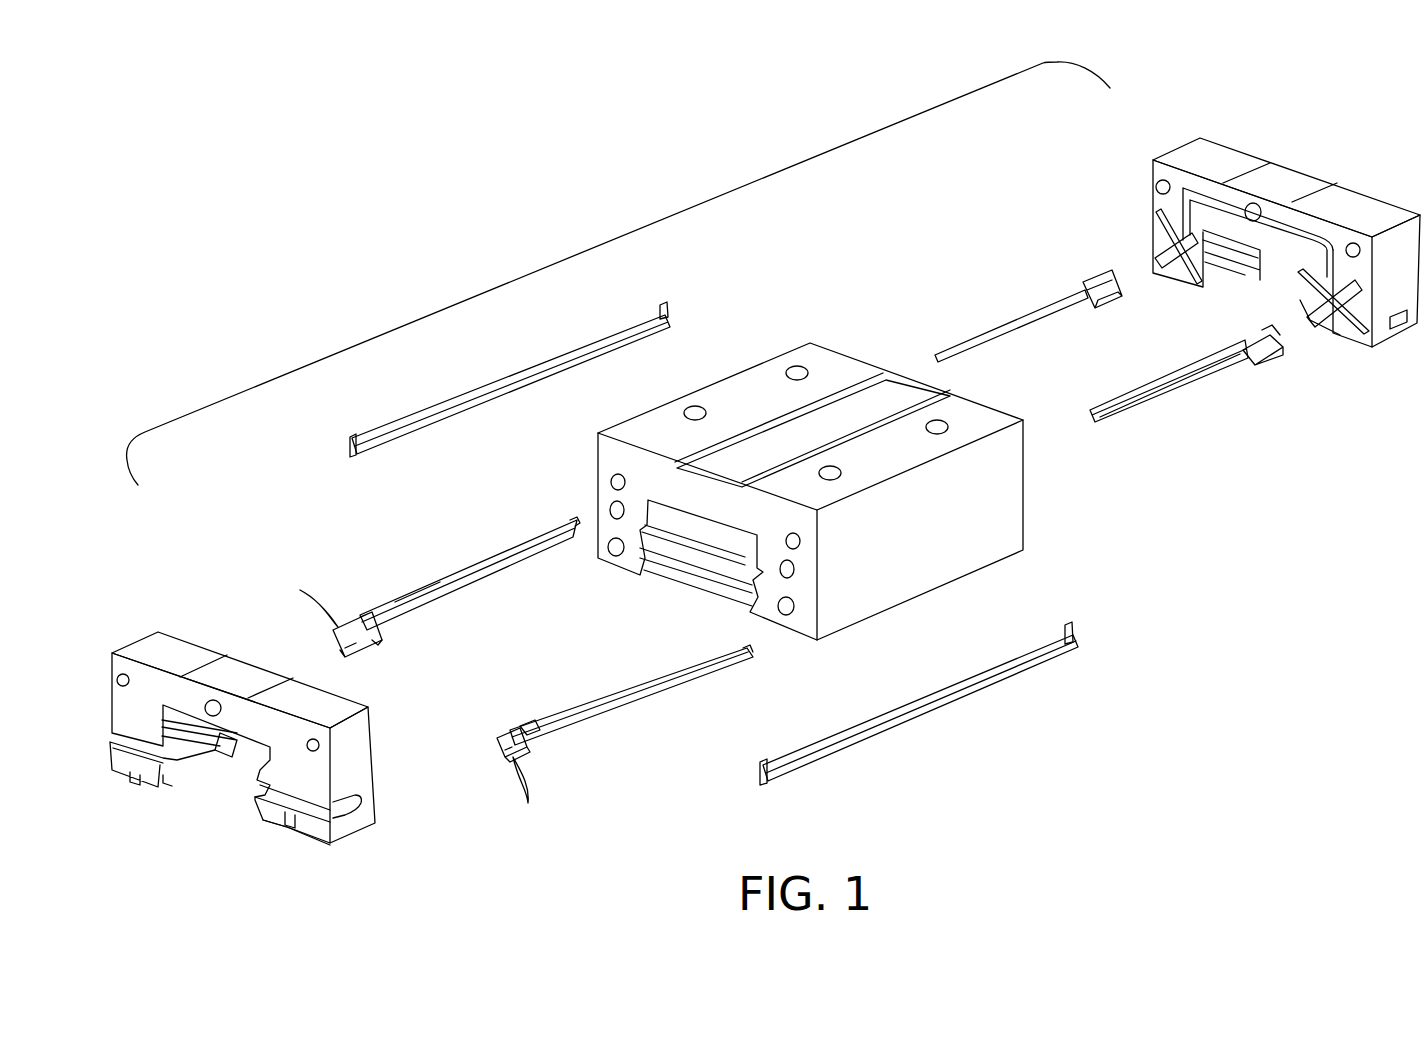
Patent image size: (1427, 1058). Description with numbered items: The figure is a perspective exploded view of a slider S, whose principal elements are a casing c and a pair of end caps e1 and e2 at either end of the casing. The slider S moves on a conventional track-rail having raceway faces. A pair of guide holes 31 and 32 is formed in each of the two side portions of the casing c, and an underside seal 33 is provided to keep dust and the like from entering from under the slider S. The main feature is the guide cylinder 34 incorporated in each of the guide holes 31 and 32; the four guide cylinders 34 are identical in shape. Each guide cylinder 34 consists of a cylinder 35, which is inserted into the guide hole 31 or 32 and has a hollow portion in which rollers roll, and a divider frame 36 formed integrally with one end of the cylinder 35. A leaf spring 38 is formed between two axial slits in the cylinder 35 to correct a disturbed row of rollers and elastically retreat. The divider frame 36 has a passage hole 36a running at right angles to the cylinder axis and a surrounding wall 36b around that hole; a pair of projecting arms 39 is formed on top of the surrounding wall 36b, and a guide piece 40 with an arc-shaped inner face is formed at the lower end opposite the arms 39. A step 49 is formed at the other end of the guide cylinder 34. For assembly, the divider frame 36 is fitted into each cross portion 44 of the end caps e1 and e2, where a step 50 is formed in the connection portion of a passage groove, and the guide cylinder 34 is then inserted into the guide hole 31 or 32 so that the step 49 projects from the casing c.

The guide hole 31 is at (617, 510).
The guide hole 32 is at (617, 547).
The underside seal 33 is at (487, 385).
The guide cylinder 34 is at (988, 318).
The cylinder 35 is at (403, 600).
The divider frame 36 is at (490, 729).
The passage hole 36a is at (1105, 278).
The surrounding wall 36b is at (362, 633).
The leaf spring 38 is at (1155, 380).
The projecting arms 39 is at (528, 758).
The guide piece 40 is at (375, 643).
The cross portion 44 is at (1335, 240).
The step 49 is at (577, 518).
The step 50 is at (1157, 213).
The slider s is at (590, 244).
The casing c is at (838, 362).
The end cap e1 is at (1240, 158).
The end cap e2 is at (180, 640).